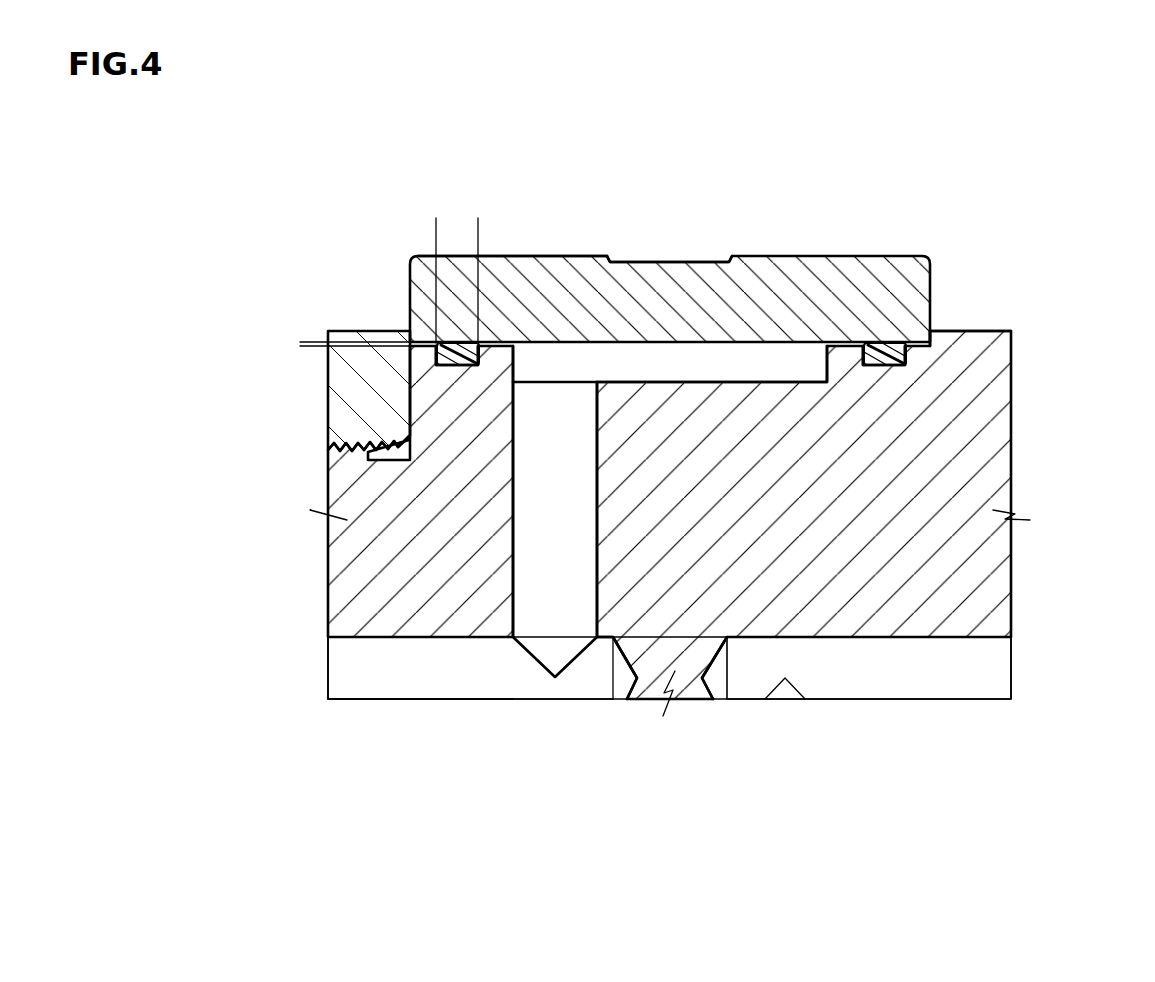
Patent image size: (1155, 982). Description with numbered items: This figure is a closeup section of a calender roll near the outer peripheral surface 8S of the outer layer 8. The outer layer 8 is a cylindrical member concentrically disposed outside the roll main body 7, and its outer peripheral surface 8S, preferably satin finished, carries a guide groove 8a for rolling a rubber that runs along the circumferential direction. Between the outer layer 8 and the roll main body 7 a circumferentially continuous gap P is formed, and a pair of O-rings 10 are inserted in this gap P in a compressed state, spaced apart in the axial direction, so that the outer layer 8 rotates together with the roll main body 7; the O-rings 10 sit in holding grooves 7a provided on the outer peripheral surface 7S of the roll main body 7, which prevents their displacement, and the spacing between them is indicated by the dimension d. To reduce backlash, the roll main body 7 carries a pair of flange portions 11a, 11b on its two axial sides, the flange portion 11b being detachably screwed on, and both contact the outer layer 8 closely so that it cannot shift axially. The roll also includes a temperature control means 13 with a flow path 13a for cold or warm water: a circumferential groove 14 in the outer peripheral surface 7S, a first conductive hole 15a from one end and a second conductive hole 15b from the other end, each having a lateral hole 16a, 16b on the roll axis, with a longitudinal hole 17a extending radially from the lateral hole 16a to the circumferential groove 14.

The roll main body 7 is at (952, 482).
The holding groove 7a is at (442, 370).
The outer peripheral surface of the roll main body 7S is at (845, 347).
The outer layer 8 is at (894, 290).
The guide groove 8a is at (671, 262).
The outer peripheral surface of the outer layer 8S is at (545, 258).
The O-ring 10 is at (420, 343).
The flange portion 11a is at (968, 329).
The flange portion 11b is at (372, 371).
The temperature control means 13 is at (669, 757).
The flow path 13a is at (669, 676).
The circumferential groove 14 is at (660, 362).
The first conductive hole 15a is at (617, 766).
The second conductive hole 15b is at (869, 730).
The lateral hole 16a is at (473, 668).
The lateral hole 16b is at (858, 672).
The longitudinal hole 17a is at (565, 593).
The dimension d is at (512, 225).
The gap P is at (310, 318).